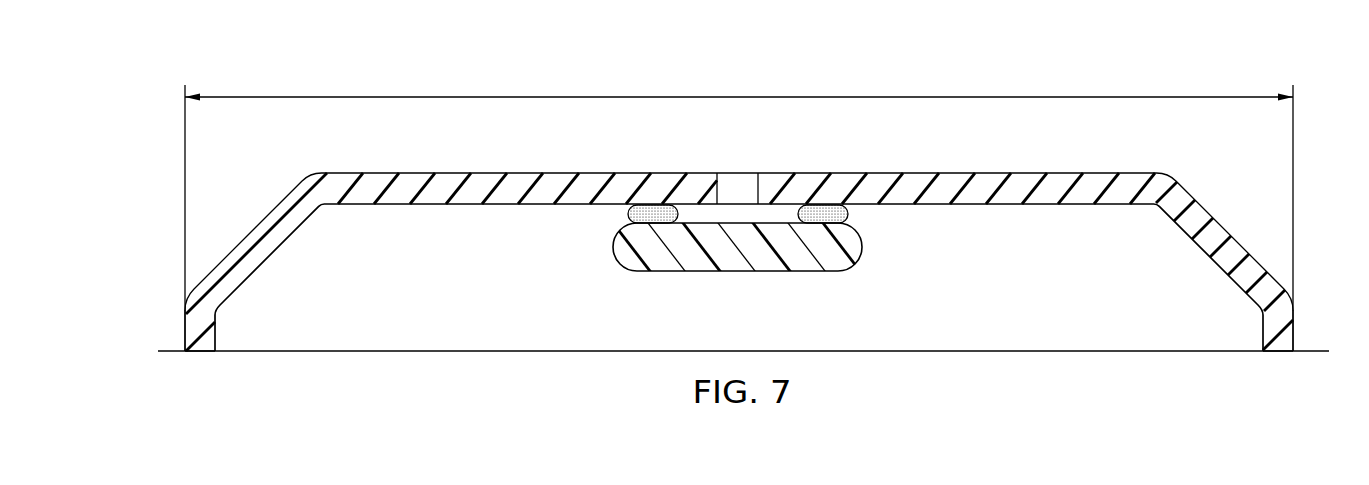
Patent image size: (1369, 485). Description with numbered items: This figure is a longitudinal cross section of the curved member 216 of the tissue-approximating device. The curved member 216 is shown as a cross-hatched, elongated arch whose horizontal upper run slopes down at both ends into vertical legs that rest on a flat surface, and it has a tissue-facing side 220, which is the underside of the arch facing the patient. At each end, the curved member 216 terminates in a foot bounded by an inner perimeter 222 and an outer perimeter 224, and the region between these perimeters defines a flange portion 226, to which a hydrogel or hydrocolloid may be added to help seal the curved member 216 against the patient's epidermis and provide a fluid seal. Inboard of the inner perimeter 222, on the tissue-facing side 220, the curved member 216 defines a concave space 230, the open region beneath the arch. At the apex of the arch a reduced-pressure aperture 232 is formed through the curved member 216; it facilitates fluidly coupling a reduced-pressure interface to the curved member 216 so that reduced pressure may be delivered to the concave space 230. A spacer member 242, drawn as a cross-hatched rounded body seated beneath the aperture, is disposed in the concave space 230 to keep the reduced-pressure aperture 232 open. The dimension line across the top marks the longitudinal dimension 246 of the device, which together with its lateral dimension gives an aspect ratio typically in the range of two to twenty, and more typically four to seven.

The curved member 216 is at (276, 192).
The second, tissue-facing side 220 is at (290, 233).
The inner perimeter 222 is at (215, 341).
The outer perimeter 224 is at (182, 348).
The flange portion 226 is at (190, 353).
The concave space 230 is at (756, 333).
The reduced-pressure aperture 232 is at (737, 180).
The spacer member 242 is at (808, 272).
The longitudinal dimension 246 is at (740, 97).